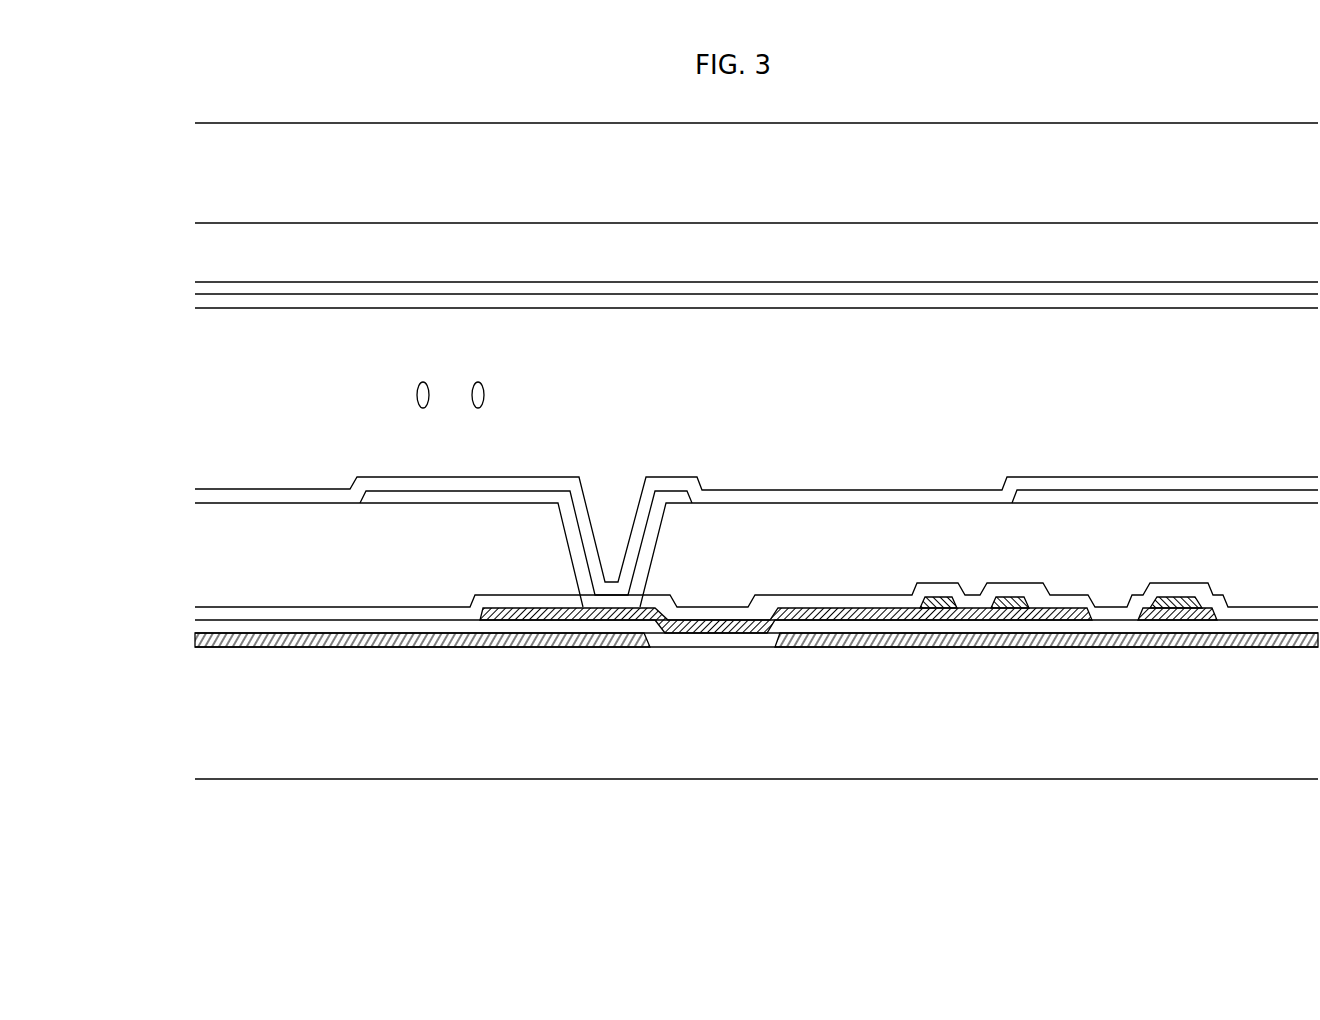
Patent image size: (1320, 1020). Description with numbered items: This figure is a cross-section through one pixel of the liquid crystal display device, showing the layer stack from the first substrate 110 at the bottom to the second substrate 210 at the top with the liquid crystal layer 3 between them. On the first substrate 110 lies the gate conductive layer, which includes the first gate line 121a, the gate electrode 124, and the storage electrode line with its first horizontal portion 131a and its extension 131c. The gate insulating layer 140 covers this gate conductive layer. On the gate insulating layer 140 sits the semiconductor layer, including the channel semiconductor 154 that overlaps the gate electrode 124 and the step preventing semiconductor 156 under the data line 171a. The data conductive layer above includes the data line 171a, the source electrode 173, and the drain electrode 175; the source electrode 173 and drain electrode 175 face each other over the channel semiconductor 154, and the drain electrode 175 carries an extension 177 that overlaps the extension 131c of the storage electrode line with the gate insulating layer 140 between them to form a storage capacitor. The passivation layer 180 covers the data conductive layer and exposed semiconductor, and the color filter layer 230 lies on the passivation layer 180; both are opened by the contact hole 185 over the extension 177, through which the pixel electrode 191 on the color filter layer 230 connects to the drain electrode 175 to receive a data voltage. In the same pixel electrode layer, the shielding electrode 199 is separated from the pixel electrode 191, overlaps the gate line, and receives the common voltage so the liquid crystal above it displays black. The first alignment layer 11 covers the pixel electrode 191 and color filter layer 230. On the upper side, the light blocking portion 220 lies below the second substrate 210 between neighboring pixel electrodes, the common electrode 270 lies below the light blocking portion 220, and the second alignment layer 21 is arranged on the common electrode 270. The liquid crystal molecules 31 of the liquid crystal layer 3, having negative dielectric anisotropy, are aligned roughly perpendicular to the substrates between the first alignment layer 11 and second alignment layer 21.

The second substrate 210 is at (210, 174).
The light blocking portion 220 is at (210, 250).
The common electrode 270 is at (195, 284).
The second alignment layer 21 is at (197, 301).
The liquid crystal layer 3 is at (197, 306).
The liquid crystal molecules 31 is at (486, 395).
The first alignment layer 11 is at (205, 500).
The shielding electrode 199 is at (1100, 497).
The color filter layer 230 is at (207, 558).
The passivation layer 180 is at (196, 607).
The gate insulating layer 140 is at (196, 636).
The first substrate 110 is at (207, 716).
The first horizontal portion 131a is at (294, 647).
The first gate line 121a is at (812, 641).
The pixel electrode 191 is at (613, 604).
The extension 177 is at (650, 625).
The contact hole 185 is at (574, 566).
The extension 131c is at (588, 640).
The drain electrode 175 is at (888, 621).
The gate electrode 124 is at (978, 643).
The channel semiconductor 154 is at (1007, 621).
The source electrode 173 is at (1062, 621).
The step preventing semiconductor 156 is at (1167, 621).
The data line 171a is at (1197, 610).